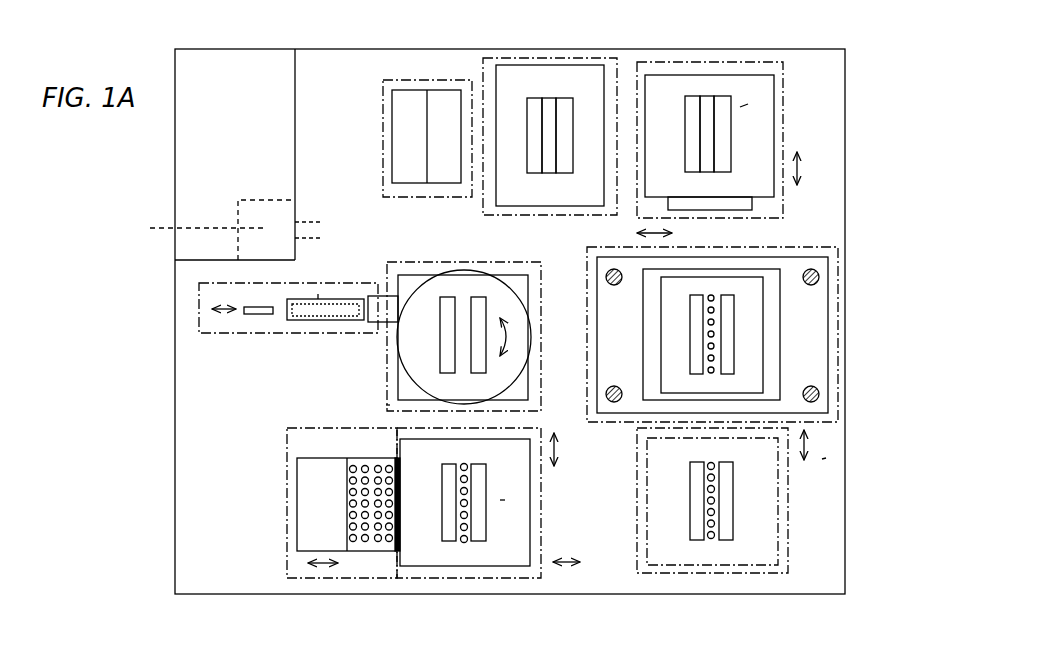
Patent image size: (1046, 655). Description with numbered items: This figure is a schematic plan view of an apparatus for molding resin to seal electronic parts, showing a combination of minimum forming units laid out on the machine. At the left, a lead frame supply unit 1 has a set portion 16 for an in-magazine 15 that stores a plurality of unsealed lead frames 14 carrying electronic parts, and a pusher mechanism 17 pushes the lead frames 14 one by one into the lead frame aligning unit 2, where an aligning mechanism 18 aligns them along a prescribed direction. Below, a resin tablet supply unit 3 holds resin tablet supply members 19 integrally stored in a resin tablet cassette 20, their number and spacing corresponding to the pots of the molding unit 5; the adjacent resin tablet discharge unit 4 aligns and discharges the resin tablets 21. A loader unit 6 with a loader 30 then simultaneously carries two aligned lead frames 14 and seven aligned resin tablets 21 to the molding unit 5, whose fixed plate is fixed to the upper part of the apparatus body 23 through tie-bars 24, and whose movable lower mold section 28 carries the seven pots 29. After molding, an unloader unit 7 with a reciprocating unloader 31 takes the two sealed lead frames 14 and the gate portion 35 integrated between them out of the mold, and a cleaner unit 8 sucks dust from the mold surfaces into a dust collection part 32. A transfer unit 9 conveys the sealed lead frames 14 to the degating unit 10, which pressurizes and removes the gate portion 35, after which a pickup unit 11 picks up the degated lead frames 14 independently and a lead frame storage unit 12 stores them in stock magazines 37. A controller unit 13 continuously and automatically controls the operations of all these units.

The lead frame supply unit 1 is at (197, 292).
The lead frame aligning unit 2 is at (386, 405).
The resin tablet supply unit 3 is at (285, 507).
The resin tablet discharge unit 4 is at (505, 536).
The molding unit 5 is at (796, 241).
The loader unit 6 is at (791, 517).
The unloader unit 7 is at (786, 118).
The cleaner unit 8 is at (754, 203).
The transfer unit 9 is at (748, 104).
The degating unit 10 is at (482, 67).
The pickup unit 11 is at (398, 77).
The lead frame storage unit 12 is at (390, 97).
The controller unit 13 is at (231, 46).
The lead frames 14 is at (533, 105).
The in-magazine 15 is at (329, 321).
The set portion 16 is at (318, 294).
The pusher mechanism 17 is at (259, 316).
The aligning mechanism 18 is at (413, 337).
The resin tablet supply members 19 is at (363, 530).
The resin tablet cassette 20 is at (365, 460).
The resin tablets 21 is at (711, 540).
The apparatus body 23 is at (826, 458).
The tie-bars 24 is at (820, 395).
The movable lower mold section 28 is at (752, 335).
The pots 29 is at (714, 357).
The loader 30 is at (505, 500).
The unloader 31 is at (760, 148).
The dust collection part 32 is at (192, 228).
The gate portion 35 is at (550, 105).
The stock magazines 37 is at (412, 141).